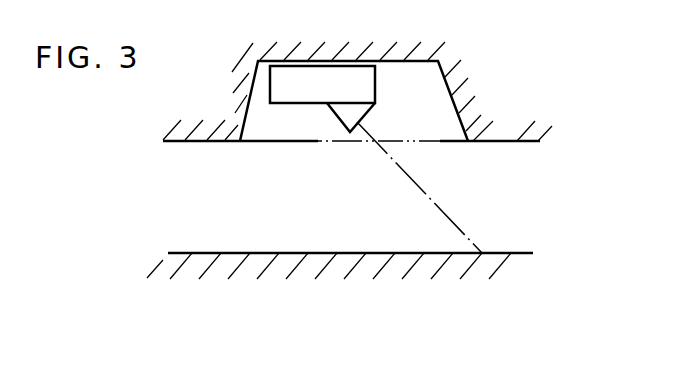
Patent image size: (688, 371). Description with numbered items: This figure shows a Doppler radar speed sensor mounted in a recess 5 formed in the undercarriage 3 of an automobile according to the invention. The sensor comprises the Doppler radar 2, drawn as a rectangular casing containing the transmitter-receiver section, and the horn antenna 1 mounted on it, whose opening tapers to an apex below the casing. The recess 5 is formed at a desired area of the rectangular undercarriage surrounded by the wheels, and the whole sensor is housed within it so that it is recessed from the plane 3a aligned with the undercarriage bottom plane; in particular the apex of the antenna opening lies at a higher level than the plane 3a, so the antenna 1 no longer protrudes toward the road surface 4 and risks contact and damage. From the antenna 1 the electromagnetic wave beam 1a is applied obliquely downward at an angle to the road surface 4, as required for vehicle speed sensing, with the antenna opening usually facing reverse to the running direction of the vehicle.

The horn antenna 1 is at (337, 118).
The electromagnetic wave beam 1a is at (357, 127).
The Doppler radar 2 is at (295, 105).
The undercarriage 3 is at (503, 141).
The plane aligned with undercarriage bottom plane 3a is at (440, 143).
The road surface 4 is at (457, 258).
The recess 5 is at (420, 52).